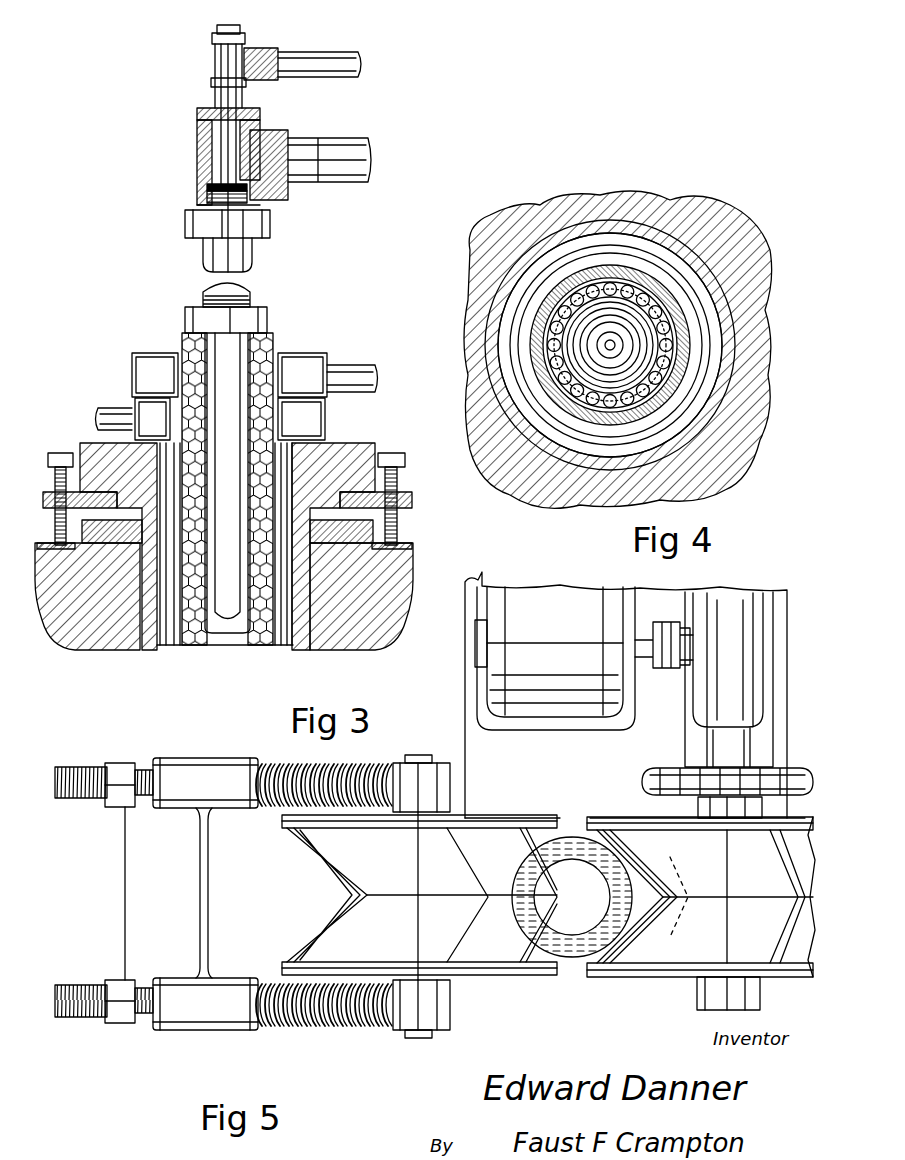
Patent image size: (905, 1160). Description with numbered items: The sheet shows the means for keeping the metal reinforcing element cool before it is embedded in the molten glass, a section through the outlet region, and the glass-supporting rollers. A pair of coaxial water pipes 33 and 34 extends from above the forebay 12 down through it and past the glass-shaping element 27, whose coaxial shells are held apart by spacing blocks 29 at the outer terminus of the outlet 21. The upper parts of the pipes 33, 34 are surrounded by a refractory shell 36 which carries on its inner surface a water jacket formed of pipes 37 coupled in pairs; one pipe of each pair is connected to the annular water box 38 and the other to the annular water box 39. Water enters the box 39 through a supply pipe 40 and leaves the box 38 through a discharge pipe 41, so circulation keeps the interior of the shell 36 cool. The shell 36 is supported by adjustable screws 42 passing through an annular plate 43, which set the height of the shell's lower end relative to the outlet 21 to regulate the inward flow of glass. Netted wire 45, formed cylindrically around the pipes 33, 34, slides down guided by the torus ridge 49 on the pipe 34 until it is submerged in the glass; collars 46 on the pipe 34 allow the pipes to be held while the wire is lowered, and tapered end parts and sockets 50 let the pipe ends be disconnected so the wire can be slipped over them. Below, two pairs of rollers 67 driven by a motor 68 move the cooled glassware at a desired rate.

In FIG. 3, the forebay 12 is at (390, 585).
In FIG. 4, the forebay 12 is at (707, 453).
In FIG. 4, the outlet 21 is at (703, 253).
In FIG. 4, the glass-shaping element 27 is at (577, 427).
In FIG. 4, the spacing blocks 29 is at (570, 265).
In FIG. 3, the inner water pipe 33 is at (215, 96).
In FIG. 4, the inner water pipe 33 is at (623, 345).
In FIG. 3, the outer water pipe 34 is at (222, 253).
In FIG. 4, the outer water pipe 34 is at (673, 370).
In FIG. 3, the refractory shell 36 is at (300, 615).
In FIG. 4, the refractory shell 36 is at (672, 302).
In FIG. 3, the water jacket pipes 37 is at (165, 610).
In FIG. 4, the water jacket pipes 37 is at (612, 278).
In FIG. 3, the annular water box 38 is at (150, 362).
In FIG. 3, the annular water box 39 is at (150, 412).
In FIG. 3, the water supply pipe 40 is at (98, 416).
In FIG. 3, the water discharge pipe 41 is at (352, 378).
In FIG. 3, the adjustable screws 42 is at (49, 453).
In FIG. 3, the annular plate 43 is at (410, 498).
In FIG. 3, the netted wire 45 is at (270, 345).
In FIG. 3, the collars 46 is at (212, 226).
In FIG. 4, the torus ridge 49 is at (583, 310).
In FIG. 3, the tapered end parts and sockets 50 is at (278, 80).
In FIG. 5, the rollers 67 is at (483, 947).
In FIG. 5, the motor 68 is at (548, 623).